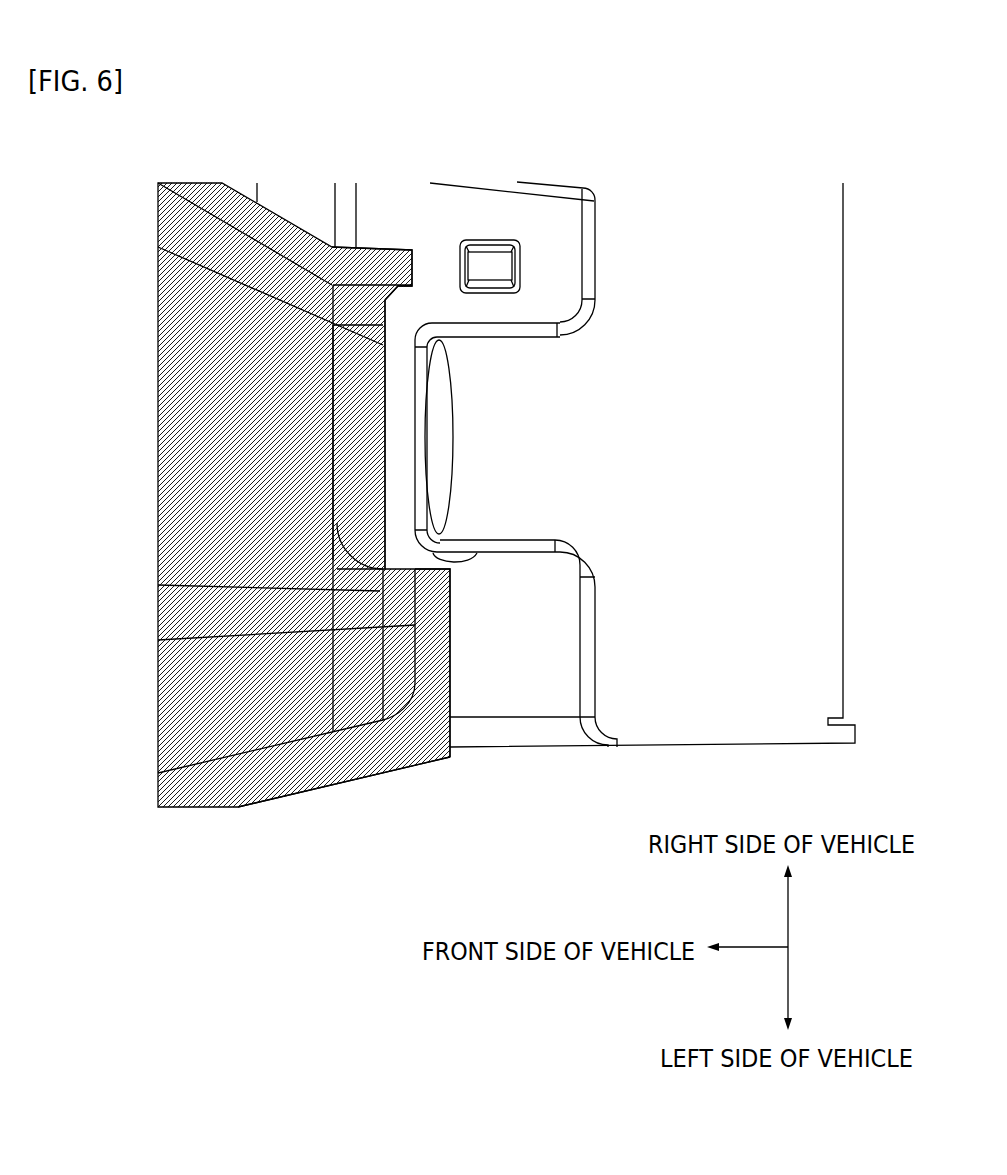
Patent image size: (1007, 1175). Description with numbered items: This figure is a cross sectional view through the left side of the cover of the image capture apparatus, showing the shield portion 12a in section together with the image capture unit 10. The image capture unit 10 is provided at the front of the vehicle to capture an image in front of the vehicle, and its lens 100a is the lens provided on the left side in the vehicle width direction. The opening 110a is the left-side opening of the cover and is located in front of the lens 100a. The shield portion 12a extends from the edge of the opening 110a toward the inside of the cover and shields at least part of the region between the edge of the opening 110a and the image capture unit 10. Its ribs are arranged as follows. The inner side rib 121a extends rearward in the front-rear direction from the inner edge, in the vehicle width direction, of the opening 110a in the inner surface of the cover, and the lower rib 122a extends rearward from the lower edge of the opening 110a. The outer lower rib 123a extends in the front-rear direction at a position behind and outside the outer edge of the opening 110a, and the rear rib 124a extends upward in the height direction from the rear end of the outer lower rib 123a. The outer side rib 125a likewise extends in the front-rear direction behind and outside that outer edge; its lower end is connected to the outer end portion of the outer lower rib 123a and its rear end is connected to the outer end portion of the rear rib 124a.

The image capture unit 10 is at (537, 682).
The shield portion 12a is at (232, 559).
The lens 100a is at (438, 393).
The opening 110a is at (330, 446).
The inner side rib 121a is at (380, 265).
The lower rib 122a is at (360, 490).
The outer lower rib 123a is at (402, 653).
The rear rib 124a is at (437, 645).
The outer side rib 125a is at (383, 745).